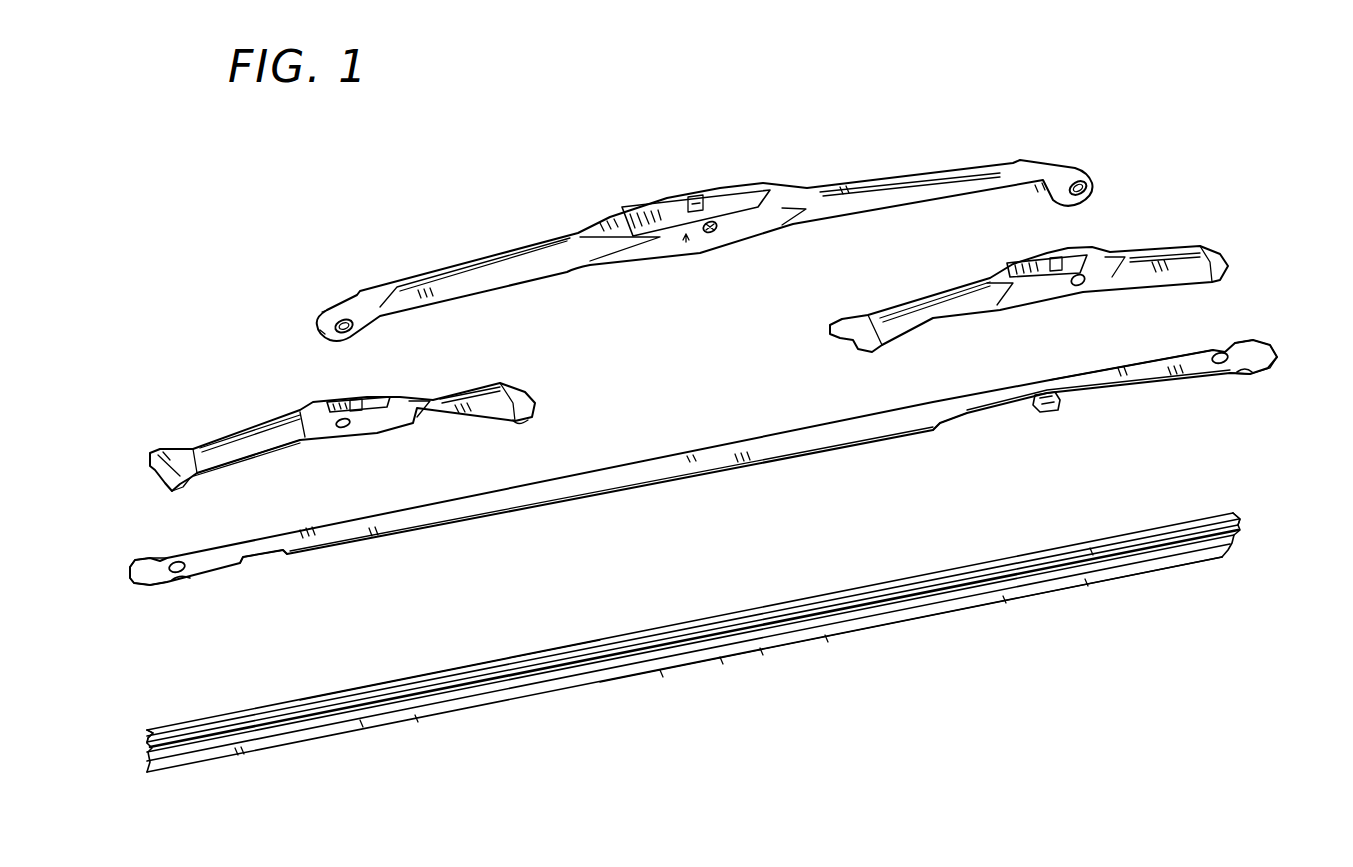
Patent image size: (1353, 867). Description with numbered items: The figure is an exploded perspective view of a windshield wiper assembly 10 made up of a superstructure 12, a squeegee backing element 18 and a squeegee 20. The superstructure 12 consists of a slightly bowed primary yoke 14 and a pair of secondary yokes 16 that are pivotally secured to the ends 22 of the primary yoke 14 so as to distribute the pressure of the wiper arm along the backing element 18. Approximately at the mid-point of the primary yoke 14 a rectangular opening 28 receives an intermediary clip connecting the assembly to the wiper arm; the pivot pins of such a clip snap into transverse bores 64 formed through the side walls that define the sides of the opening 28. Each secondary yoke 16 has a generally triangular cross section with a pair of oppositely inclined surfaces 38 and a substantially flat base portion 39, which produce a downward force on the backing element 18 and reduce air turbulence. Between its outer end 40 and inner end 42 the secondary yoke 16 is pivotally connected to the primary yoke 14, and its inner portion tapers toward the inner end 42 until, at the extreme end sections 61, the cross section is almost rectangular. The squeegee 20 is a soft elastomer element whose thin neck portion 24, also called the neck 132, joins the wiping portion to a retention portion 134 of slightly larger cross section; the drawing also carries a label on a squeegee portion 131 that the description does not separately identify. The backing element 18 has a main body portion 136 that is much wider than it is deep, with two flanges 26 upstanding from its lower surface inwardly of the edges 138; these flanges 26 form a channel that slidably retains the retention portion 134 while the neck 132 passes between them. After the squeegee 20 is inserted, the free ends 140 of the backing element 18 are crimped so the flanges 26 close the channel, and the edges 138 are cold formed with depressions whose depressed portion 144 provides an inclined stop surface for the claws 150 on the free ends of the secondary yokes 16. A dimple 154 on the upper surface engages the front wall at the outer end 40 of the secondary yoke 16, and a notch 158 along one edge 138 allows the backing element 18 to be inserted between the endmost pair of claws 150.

The windshield wiper assembly 10 is at (313, 265).
The superstructure 12 is at (1137, 193).
The primary yoke 14 is at (887, 177).
The secondary yokes 16 is at (1133, 253).
The squeegee backing element 18 is at (937, 402).
The squeegee 20 is at (1233, 533).
The ends of primary yoke 22 is at (343, 302).
The thin neck portion 24 is at (1240, 527).
The flanges 26 is at (1033, 410).
The opening 28 is at (727, 198).
The oppositely inclined surfaces 38 is at (213, 427).
The flat base portion 39 is at (213, 470).
The outer end 40 is at (173, 460).
The inner end 42 is at (533, 405).
The extreme end sections 61 is at (500, 393).
The transverse bores 64 is at (707, 232).
The blade element body 131 is at (737, 650).
The thin neck 132 is at (147, 733).
The retention portion 134 is at (400, 680).
The main body portion 136 is at (1083, 383).
The edges 138 is at (1152, 360).
The free ends of backing element 140 is at (1267, 348).
The depressed portion 144 is at (1243, 370).
The claws 150 is at (180, 487).
The dimple 154 is at (1227, 350).
The notch 158 is at (277, 553).